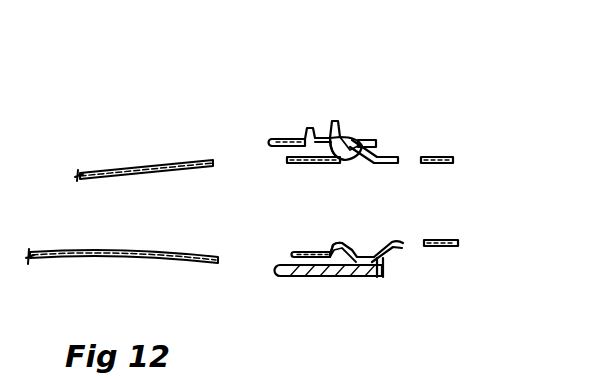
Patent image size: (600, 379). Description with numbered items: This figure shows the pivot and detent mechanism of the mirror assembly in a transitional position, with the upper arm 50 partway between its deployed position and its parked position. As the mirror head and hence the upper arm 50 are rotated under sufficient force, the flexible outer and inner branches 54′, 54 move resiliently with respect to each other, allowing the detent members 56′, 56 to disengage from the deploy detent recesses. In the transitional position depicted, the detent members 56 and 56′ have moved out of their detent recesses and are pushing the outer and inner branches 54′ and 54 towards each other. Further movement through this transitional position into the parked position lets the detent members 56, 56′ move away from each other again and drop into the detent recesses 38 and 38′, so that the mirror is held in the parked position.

The upper arm 50 is at (140, 171).
The detent recess 38 is at (340, 165).
The detent recess 38′ is at (332, 252).
The detent member 56 is at (379, 278).
The detent member 56′ is at (360, 143).
The inner branch 54 is at (450, 247).
The outer branch 54′ is at (448, 157).